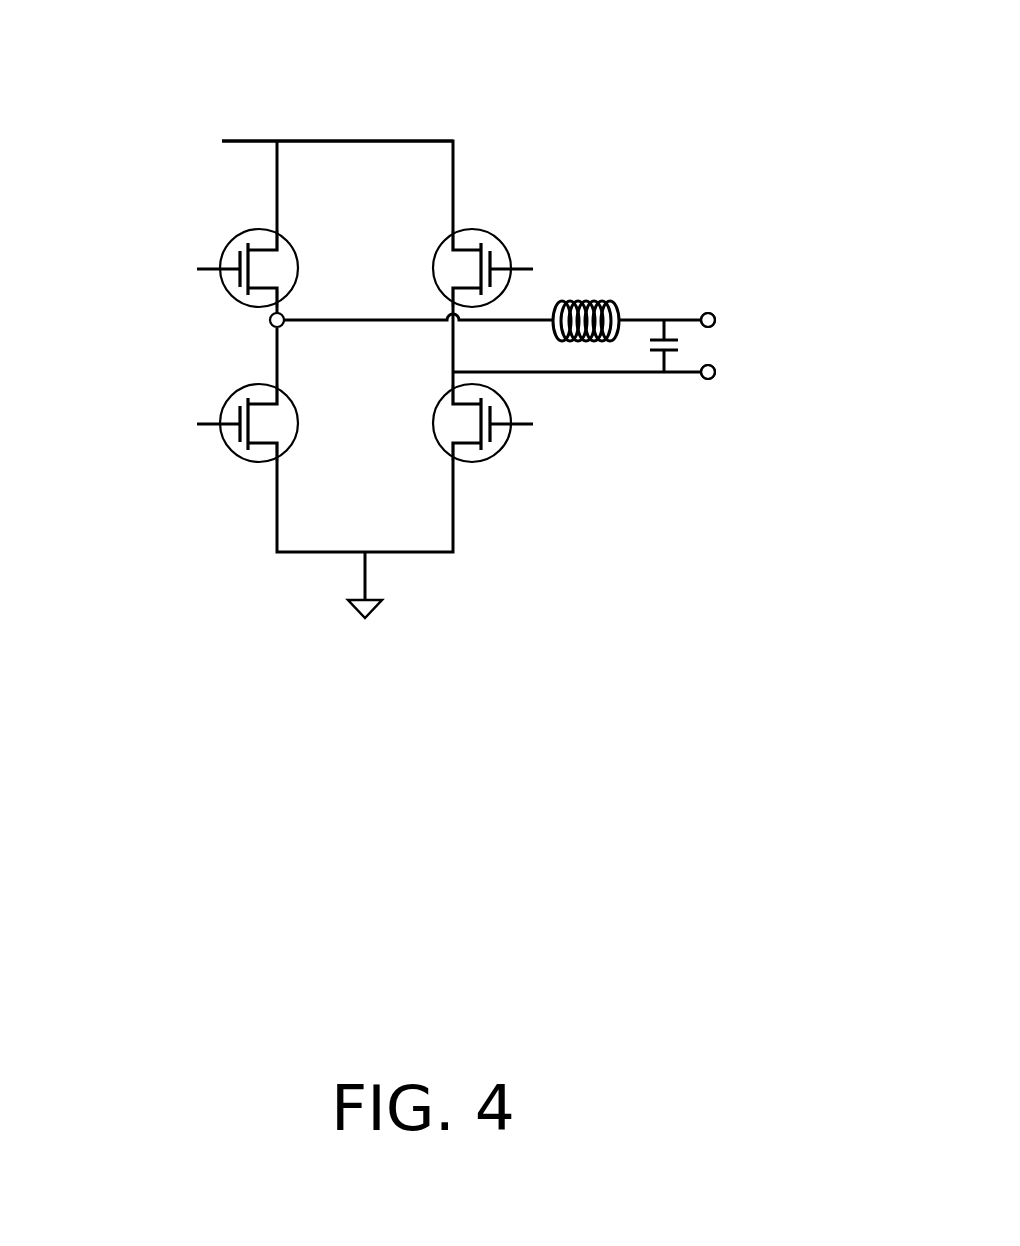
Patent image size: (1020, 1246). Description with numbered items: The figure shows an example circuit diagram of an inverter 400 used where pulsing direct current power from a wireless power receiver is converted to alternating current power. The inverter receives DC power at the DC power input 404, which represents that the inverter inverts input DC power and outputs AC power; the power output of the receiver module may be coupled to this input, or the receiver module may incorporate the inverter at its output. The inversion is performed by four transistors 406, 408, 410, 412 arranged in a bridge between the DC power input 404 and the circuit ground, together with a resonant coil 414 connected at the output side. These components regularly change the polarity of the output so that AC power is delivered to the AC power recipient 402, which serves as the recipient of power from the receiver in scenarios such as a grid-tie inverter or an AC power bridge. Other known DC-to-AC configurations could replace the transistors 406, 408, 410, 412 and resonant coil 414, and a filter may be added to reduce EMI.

The inverter circuit diagram 400 is at (560, 78).
The AC power recipient 402 is at (773, 339).
The DC power input 404 is at (260, 139).
The transistor 406 is at (237, 253).
The transistor 408 is at (237, 408).
The transistor 410 is at (447, 253).
The transistor 412 is at (447, 408).
The resonant coil 414 is at (578, 342).